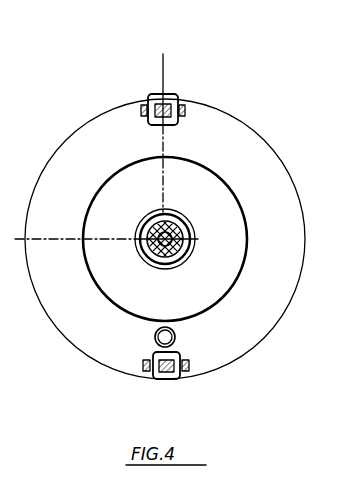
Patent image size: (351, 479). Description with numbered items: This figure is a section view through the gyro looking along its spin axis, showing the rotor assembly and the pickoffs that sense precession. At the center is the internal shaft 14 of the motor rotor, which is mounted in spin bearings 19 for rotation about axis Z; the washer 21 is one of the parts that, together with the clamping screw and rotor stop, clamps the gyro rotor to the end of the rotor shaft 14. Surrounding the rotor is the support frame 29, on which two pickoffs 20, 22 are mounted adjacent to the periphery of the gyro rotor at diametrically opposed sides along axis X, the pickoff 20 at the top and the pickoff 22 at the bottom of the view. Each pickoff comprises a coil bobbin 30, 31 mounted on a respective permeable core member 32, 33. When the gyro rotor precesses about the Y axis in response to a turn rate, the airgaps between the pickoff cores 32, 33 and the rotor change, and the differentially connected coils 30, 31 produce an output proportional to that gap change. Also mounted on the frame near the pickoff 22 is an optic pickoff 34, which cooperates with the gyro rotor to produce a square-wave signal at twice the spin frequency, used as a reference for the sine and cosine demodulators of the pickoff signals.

The pickoff 20 is at (180, 63).
The support frame 29 is at (266, 152).
The internal shaft 14 is at (155, 212).
The washer 21 is at (177, 213).
The spin bearings 19 is at (167, 270).
The axis Z is at (172, 242).
The coil bobbin 30 is at (177, 95).
The permeable core member 32 is at (186, 110).
The coil bobbin 31 is at (178, 380).
The permeable core member 33 is at (190, 365).
The optic pickoff 34 is at (155, 337).
The pickoff 22 is at (160, 389).